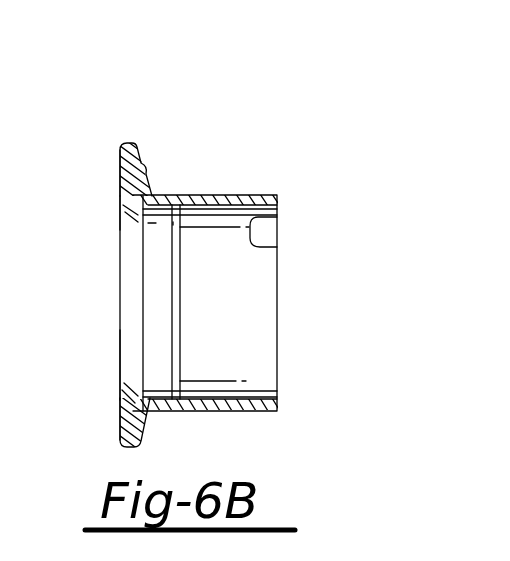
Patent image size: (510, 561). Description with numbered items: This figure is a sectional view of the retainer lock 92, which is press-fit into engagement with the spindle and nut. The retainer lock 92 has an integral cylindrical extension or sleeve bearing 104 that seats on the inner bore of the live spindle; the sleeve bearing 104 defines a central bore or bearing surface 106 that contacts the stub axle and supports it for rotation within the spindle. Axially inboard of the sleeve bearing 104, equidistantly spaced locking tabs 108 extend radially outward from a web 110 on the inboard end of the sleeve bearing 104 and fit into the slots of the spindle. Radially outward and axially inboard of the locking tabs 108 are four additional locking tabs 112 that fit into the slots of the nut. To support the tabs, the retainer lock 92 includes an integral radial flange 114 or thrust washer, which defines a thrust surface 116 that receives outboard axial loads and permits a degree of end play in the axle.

The retainer lock 92 is at (72, 190).
The sleeve bearing 104 is at (222, 196).
The bearing surface 106 is at (274, 247).
The locking tabs 108 is at (143, 171).
The web 110 is at (118, 197).
The additional locking tabs 112 is at (131, 147).
The radial flange 114 is at (118, 168).
The thrust surface 116 is at (119, 377).